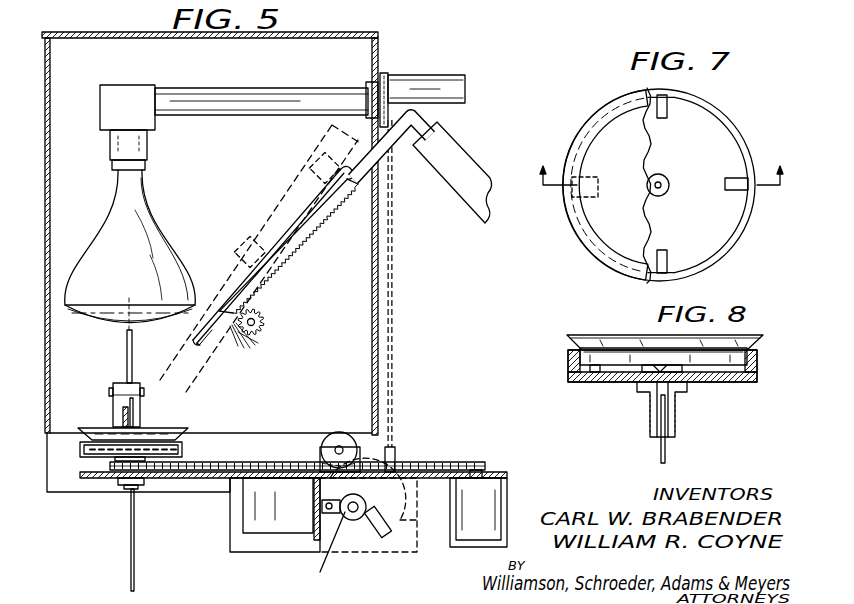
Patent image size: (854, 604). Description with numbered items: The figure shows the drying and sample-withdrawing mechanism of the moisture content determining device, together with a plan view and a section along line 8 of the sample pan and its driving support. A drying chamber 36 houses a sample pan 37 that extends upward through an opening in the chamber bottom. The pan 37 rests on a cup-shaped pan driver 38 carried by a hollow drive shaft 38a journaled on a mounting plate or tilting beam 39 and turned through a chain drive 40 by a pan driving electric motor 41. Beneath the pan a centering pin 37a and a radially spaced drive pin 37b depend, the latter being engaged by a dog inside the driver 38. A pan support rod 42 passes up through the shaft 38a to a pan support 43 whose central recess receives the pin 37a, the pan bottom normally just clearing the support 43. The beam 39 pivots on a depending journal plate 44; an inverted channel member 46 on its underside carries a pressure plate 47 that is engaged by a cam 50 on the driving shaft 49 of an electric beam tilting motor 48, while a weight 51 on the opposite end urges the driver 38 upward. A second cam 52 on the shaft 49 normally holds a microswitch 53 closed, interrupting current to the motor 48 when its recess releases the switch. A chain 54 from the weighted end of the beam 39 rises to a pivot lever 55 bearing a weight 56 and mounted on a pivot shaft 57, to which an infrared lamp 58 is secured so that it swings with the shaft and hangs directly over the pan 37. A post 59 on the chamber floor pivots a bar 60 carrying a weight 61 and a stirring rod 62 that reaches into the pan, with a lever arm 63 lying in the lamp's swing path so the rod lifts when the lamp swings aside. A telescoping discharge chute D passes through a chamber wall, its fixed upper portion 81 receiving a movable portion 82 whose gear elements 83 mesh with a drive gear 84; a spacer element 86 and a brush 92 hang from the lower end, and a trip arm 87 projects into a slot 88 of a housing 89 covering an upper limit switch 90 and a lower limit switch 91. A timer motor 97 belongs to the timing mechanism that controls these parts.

In FIG. 5, the drying chamber 36 is at (47, 131).
In FIG. 5, the sample pan 37 is at (170, 430).
In FIG. 7, the sample pan 37 is at (608, 128).
In FIG. 8, the sample pan 37 is at (567, 337).
In FIG. 8, the centering or positioning pin 37a is at (664, 364).
In FIG. 7, the drive pin 37b is at (595, 192).
In FIG. 8, the drive pin 37b is at (594, 372).
In FIG. 5, the pan driver 38 is at (182, 450).
In FIG. 7, the pan driver 38 is at (726, 113).
In FIG. 8, the pan driver 38 is at (568, 370).
In FIG. 5, the hollow drive shaft 38a is at (118, 486).
In FIG. 8, the hollow drive shaft 38a is at (650, 420).
In FIG. 5, the mounting plate or tilting beam 39 is at (325, 459).
In FIG. 5, the chain drive 40 is at (212, 464).
In FIG. 5, the pan driving electric motor 41 is at (245, 526).
In FIG. 5, the pan support rod 42 is at (130, 557).
In FIG. 8, the pan support rod 42 is at (667, 452).
In FIG. 7, the pan support 43 is at (669, 180).
In FIG. 8, the pan support 43 is at (684, 372).
In FIG. 5, the journal plate 44 is at (290, 421).
In FIG. 5, the inverted channel member 46 is at (195, 480).
In FIG. 5, the pressure plate 47 is at (312, 525).
In FIG. 5, the electric beam tilting motor 48 is at (398, 506).
In FIG. 5, the driving shaft 49 is at (356, 505).
In FIG. 5, the cam 50 is at (319, 547).
In FIG. 5, the weight 51 is at (494, 524).
In FIG. 5, the second cam 52 is at (342, 519).
In FIG. 5, the microswitch 53 is at (388, 525).
In FIG. 5, the chain 54 is at (396, 288).
In FIG. 5, the pivot lever 55 is at (386, 80).
In FIG. 5, the weight 56 is at (430, 84).
In FIG. 5, the pivot shaft 57 is at (260, 96).
In FIG. 5, the infrared lamp 58 is at (110, 236).
In FIG. 5, the post 59 is at (113, 401).
In FIG. 5, the bar 60 is at (126, 386).
In FIG. 5, the weight 61 is at (135, 414).
In FIG. 5, the stirring rod 62 is at (123, 418).
In FIG. 5, the lever arm 63 is at (126, 348).
In FIG. 5, the fixed upper portion 81 is at (400, 146).
In FIG. 5, the movable portion 82 is at (232, 306).
In FIG. 5, the gear elements 83 is at (330, 238).
In FIG. 5, the drive gear 84 is at (266, 323).
In FIG. 5, the spacer element 86 is at (197, 341).
In FIG. 5, the trip arm 87 is at (349, 188).
In FIG. 5, the slot 88 is at (306, 224).
In FIG. 5, the housing 89 is at (273, 192).
In FIG. 5, the upper limit switch 90 is at (320, 160).
In FIG. 5, the lower limit switch 91 is at (240, 249).
In FIG. 5, the brush 92 is at (246, 344).
In FIG. 5, the timer motor 97 is at (448, 144).
In FIG. 5, the telescoping withdrawing or discharge chute D is at (306, 255).
In FIG. 7, the section line 8— 8 is at (653, 167).